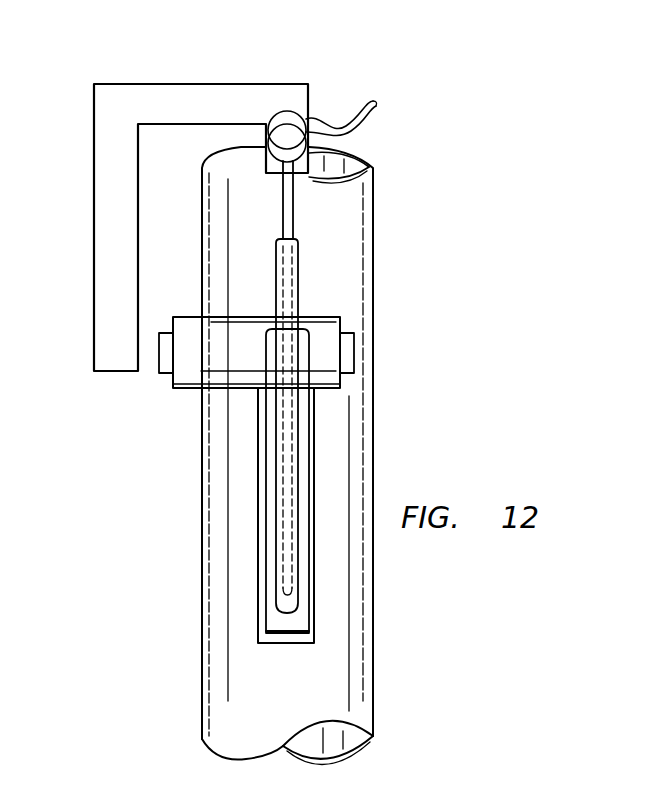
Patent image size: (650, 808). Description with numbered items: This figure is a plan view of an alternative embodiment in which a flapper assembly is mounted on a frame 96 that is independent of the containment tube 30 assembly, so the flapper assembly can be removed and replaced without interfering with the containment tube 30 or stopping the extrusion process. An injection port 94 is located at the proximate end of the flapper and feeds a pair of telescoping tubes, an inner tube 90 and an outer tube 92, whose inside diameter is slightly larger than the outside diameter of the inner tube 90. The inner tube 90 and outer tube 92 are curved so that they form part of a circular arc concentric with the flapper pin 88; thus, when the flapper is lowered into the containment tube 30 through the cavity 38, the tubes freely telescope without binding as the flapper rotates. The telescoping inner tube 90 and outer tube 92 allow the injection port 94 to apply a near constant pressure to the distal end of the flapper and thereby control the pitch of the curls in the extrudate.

The containment tube 30 is at (200, 205).
The cavity 38 is at (292, 641).
The flapper pin 88 is at (353, 350).
The inner tube 90 is at (278, 565).
The outer tube 92 is at (270, 482).
The injection port 94 is at (283, 112).
The frame 96 is at (93, 311).